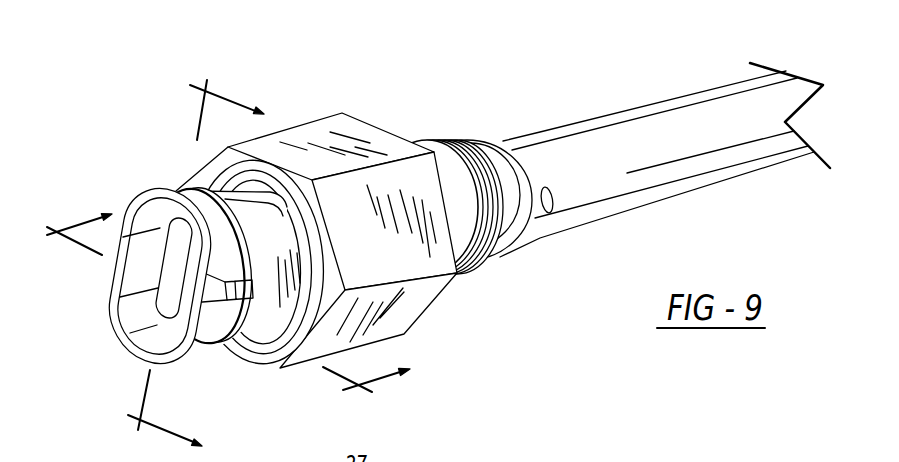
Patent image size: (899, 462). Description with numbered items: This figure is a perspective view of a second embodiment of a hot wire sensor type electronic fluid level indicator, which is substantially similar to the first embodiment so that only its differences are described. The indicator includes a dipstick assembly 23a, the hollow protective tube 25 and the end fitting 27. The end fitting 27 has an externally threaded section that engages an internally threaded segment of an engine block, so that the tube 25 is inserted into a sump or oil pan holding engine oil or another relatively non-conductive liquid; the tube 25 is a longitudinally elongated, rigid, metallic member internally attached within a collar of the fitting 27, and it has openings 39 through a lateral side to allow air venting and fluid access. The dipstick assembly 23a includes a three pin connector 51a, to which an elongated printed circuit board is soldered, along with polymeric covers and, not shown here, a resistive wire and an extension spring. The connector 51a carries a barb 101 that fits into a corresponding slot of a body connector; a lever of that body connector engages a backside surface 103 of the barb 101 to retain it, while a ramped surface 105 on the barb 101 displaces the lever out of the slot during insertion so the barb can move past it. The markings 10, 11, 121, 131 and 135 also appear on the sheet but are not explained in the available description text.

The sensor assembly (section line) 10 is at (241, 292).
The section line 11 is at (177, 250).
The dipstick assembly 23a is at (80, 313).
The hollow protective tube 25 is at (676, 130).
The end fitting 27 is at (349, 133).
The openings 39 is at (549, 211).
The three pin connector 51a is at (200, 338).
The barb 101 is at (243, 290).
The backside surface 103 is at (252, 284).
The ramped surface 105 is at (242, 292).
The element 121 is at (414, 450).
The element 131 is at (470, 454).
The element 135 is at (515, 451).